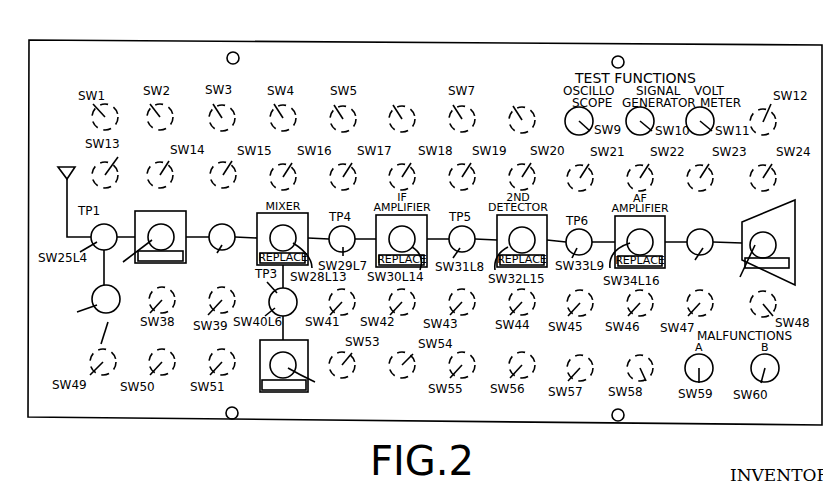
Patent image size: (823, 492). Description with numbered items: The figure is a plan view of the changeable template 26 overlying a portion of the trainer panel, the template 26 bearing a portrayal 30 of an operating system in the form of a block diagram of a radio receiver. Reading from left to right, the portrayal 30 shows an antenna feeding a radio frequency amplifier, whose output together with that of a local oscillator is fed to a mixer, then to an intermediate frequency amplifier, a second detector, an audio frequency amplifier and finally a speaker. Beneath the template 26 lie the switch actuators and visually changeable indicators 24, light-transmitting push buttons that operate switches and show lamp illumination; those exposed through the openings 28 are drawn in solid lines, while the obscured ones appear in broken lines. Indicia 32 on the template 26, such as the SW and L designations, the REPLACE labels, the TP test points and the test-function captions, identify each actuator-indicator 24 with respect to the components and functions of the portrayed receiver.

The switch actuators and visually changeable indicators 24 is at (413, 108).
The changeable template 26 is at (687, 60).
The openings 28 is at (707, 238).
The portrayal 30 is at (66, 200).
The indicia 32 is at (177, 197).